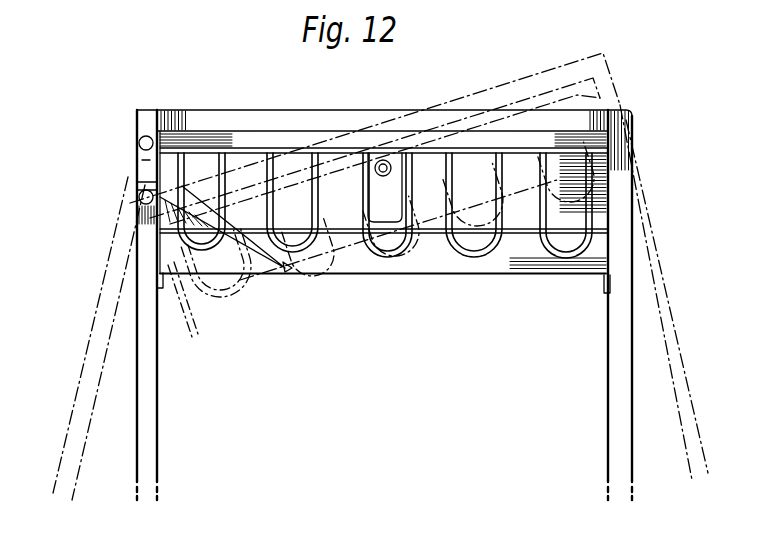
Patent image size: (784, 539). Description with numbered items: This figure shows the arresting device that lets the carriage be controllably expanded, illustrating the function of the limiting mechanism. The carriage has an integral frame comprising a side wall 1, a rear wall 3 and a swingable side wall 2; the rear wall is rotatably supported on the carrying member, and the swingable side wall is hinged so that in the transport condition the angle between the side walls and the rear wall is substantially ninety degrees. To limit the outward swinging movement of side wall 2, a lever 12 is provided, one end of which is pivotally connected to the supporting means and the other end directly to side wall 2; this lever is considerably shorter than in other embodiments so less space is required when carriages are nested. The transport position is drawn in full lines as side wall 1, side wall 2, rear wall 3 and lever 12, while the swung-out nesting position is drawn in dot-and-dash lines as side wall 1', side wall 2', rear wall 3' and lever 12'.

The side wall 1 is at (603, 305).
The side wall in swung-out position 1' is at (679, 292).
The swingable side wall 2 is at (172, 305).
The swingable side wall in swung-out position 2' is at (93, 338).
The rear wall 3 is at (384, 179).
The rear wall in swung-out position 3' is at (375, 166).
The lever 12 is at (385, 166).
The lever in swung-out position 12' is at (384, 239).